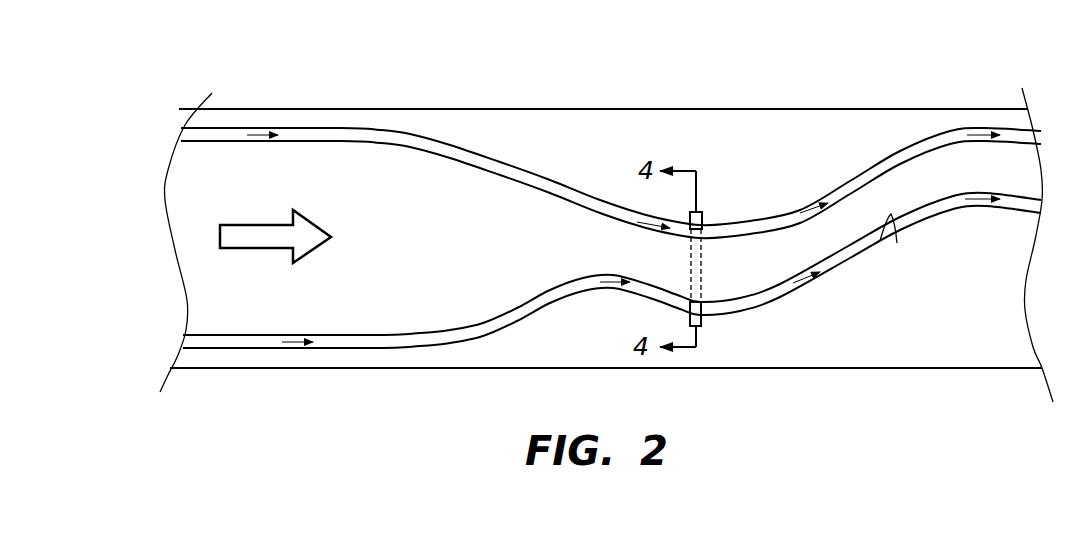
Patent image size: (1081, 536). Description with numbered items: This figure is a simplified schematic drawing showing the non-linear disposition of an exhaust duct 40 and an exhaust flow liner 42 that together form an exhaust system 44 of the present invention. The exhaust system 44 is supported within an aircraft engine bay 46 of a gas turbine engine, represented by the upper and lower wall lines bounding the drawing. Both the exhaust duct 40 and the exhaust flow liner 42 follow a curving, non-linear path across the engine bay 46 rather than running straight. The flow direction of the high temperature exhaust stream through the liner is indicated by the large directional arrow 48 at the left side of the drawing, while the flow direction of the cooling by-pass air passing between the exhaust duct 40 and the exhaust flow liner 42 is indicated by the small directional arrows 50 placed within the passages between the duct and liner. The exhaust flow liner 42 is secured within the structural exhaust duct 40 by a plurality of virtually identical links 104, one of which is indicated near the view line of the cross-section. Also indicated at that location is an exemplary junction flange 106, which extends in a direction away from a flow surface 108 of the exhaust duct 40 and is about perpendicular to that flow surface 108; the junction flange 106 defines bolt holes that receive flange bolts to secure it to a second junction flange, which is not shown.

The exhaust duct 40 is at (456, 145).
The exhaust flow liner 42 is at (391, 142).
The exhaust system 44 is at (814, 86).
The aircraft engine bay 46 is at (740, 109).
The directional arrow 48 is at (220, 225).
The directional arrows 50 is at (263, 133).
The links 104 is at (698, 306).
The junction flange 106 is at (701, 324).
The flow surface 108 is at (897, 243).